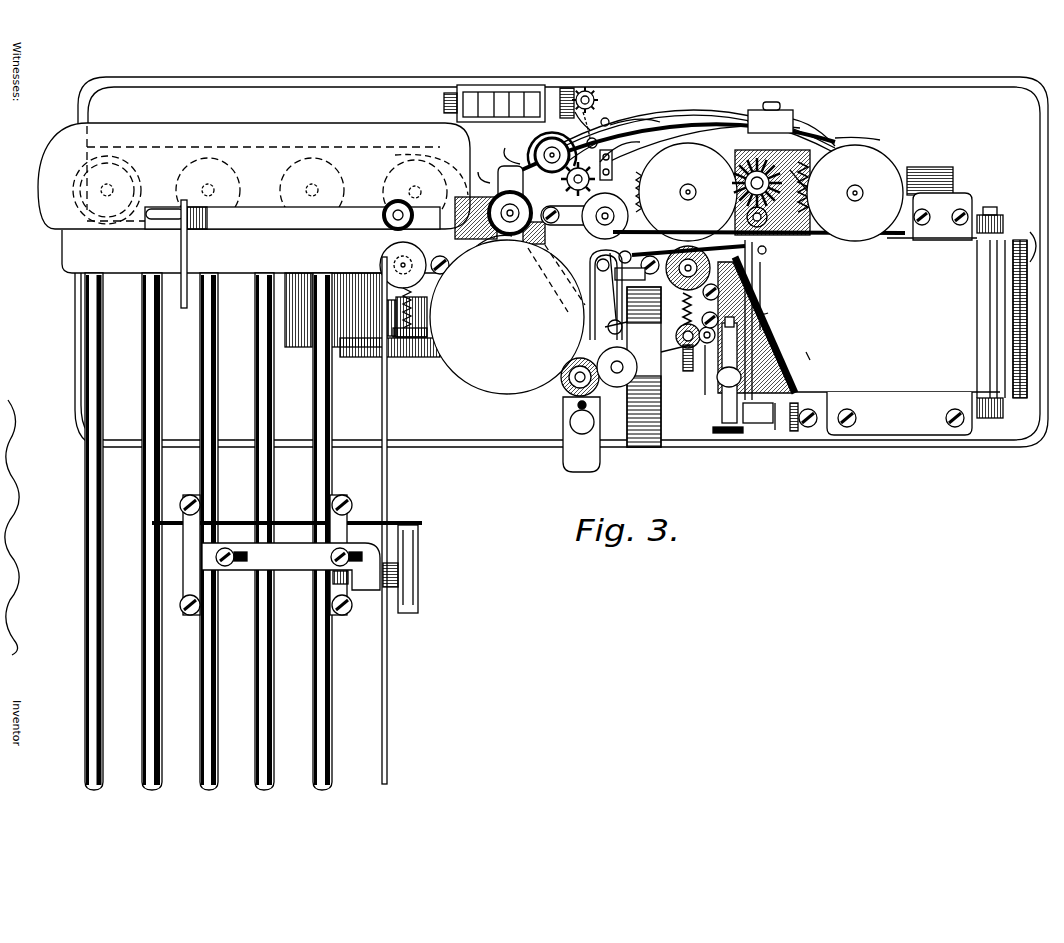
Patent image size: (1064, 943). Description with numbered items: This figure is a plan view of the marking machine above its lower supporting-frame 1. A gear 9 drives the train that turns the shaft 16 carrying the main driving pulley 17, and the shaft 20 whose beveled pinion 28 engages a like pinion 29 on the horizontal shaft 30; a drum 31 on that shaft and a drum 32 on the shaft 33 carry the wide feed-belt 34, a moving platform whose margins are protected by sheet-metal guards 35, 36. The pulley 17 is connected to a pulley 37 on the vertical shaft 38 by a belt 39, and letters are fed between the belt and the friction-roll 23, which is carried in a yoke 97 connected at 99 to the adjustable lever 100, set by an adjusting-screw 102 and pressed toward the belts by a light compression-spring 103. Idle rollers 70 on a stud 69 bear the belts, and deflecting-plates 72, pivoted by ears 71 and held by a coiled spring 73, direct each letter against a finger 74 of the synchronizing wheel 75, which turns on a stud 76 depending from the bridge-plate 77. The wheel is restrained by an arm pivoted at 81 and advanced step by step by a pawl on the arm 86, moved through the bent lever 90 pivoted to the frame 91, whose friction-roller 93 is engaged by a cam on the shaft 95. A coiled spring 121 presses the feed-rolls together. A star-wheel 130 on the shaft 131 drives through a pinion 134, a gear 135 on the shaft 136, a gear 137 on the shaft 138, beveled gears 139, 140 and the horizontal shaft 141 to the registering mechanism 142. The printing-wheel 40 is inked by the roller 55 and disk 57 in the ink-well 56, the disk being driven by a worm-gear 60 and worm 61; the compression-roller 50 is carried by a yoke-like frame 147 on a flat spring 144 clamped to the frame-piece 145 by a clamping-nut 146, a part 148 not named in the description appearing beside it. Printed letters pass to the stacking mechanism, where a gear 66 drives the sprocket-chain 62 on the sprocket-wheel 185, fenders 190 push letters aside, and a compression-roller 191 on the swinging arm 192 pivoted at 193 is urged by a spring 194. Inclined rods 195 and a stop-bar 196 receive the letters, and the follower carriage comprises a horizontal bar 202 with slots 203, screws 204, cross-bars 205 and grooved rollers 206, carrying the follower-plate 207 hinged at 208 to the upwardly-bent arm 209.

The lower supporting-frame 1 is at (514, 448).
The gear 9 is at (815, 348).
The shaft 16 is at (680, 188).
The main or driving pulley 17 is at (688, 192).
The shaft 20 is at (712, 146).
The friction-roll 23 is at (680, 246).
The beveled pinion 28 is at (855, 193).
The beveled pinion 29 is at (808, 205).
The horizontal shaft 30 is at (793, 432).
The drum 31 is at (766, 447).
The drum 32 is at (1006, 320).
The shaft 33 is at (988, 420).
The feed-belt 34 is at (861, 319).
The sheet-metal guard 35 is at (950, 240).
The sheet-metal guard 36 is at (948, 384).
The pulley 37 is at (799, 190).
The vertical shaft 38 is at (862, 188).
The belt 39 is at (846, 141).
The printing-wheel 40 is at (507, 317).
The compression-roller 50 is at (491, 249).
The roller 55 is at (598, 360).
The ink-well 56 is at (648, 445).
The disk 57 is at (628, 330).
The worm-gear 60 is at (686, 372).
The worm 61 is at (644, 367).
The sprocket-chain 62 is at (165, 146).
The gear 66 is at (410, 190).
The stud 69 is at (768, 252).
The idle rollers 70 is at (775, 296).
The ears 71 is at (790, 321).
The deflecting-plates 72 is at (705, 246).
The coiled spring 73 is at (802, 192).
The fingers 74 is at (759, 245).
The synchronizing wheel 75 is at (627, 249).
The stud 76 is at (595, 235).
The bridge-plate 77 is at (618, 256).
The pivot 81 is at (565, 312).
The arm 86 is at (568, 355).
The bent lever 90 is at (515, 158).
The frame 91 is at (683, 310).
The friction-roller 93 is at (540, 148).
The shaft 95 is at (590, 139).
The yoke 97 is at (771, 312).
The connection 99 is at (659, 360).
The adjustable lever 100 is at (704, 396).
The adjusting-screw 102 is at (742, 375).
The compression-spring 103 is at (726, 306).
The coiled spring 121 is at (655, 192).
The star-wheel 130 is at (612, 160).
The shaft 131 is at (632, 150).
The pinion 134 is at (572, 194).
The gear 135 is at (640, 128).
The shaft 136 is at (598, 137).
The gear 137 is at (668, 110).
The shaft 138 is at (608, 118).
The beveled gear 139 is at (599, 88).
The beveled gear 140 is at (587, 90).
The horizontal shaft 141 is at (567, 88).
The registering mechanism 142 is at (552, 85).
The flat spring 144 is at (706, 125).
The frame-piece 145 is at (800, 128).
The clamping-nut 146 is at (760, 112).
The yoke-like frame 147 is at (498, 192).
The roller 148 is at (496, 228).
The sprocket-wheel 185 is at (409, 197).
The fenders 190 is at (264, 240).
The compression-roller 191 is at (382, 254).
The swinging arm 192 is at (412, 290).
The pivot 193 is at (447, 270).
The spring 194 is at (428, 320).
The inclined rods 195 is at (256, 700).
The stop-bar 196 is at (181, 254).
The horizontal bar 202 is at (294, 572).
The slots 203 is at (243, 563).
The screws 204 is at (226, 548).
The cross-bars 205 is at (182, 558).
The grooved rollers 206 is at (190, 495).
The follower-plate 207 is at (284, 520).
The hinge 208 is at (418, 565).
The upwardly-bent arm 209 is at (392, 590).